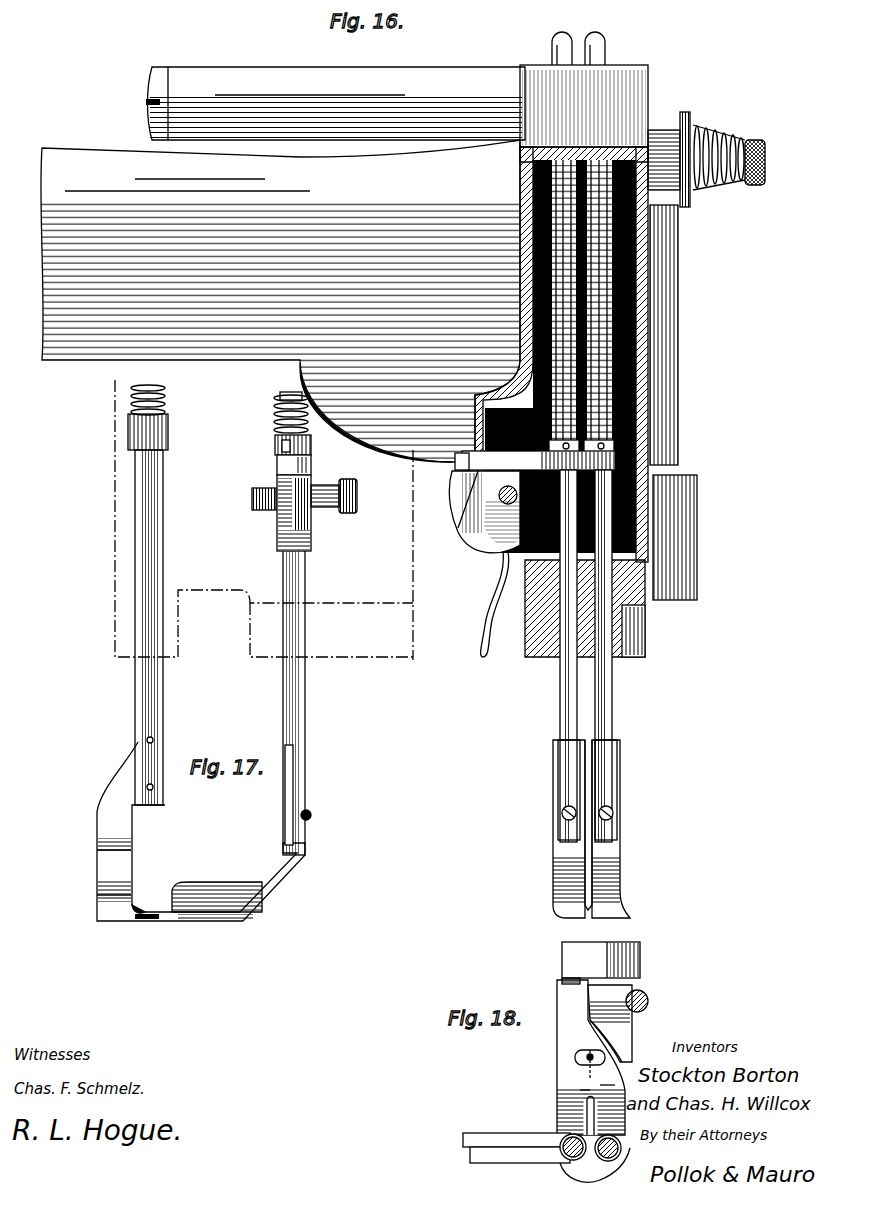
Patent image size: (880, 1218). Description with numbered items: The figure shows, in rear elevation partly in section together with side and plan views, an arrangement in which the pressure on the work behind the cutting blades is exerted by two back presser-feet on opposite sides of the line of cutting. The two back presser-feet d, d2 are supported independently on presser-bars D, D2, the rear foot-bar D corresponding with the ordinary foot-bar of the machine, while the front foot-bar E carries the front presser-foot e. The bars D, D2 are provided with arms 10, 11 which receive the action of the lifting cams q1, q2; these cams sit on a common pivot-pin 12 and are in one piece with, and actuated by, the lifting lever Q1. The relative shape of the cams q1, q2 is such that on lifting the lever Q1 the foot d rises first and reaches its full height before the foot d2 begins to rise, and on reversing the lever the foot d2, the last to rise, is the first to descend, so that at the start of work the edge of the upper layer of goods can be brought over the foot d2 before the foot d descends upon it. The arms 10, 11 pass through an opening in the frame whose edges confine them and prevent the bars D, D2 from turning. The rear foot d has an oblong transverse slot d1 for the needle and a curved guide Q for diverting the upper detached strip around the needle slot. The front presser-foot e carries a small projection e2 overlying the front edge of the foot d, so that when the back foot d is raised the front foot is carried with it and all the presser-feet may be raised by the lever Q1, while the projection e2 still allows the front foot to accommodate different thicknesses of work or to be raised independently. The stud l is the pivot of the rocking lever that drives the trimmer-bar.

In FIG. 16, the stud l is at (335, 103).
In FIG. 16, the arm 10 is at (459, 462).
In FIG. 17, the arm 10 is at (279, 463).
In FIG. 18, the arm 10 is at (516, 1140).
In FIG. 16, the arm 11 is at (538, 460).
In FIG. 17, the arm 11 is at (292, 446).
In FIG. 18, the arm 11 is at (520, 1155).
In FIG. 16, the pivot-pin 12 is at (499, 494).
In FIG. 17, the pivot-pin 12 is at (330, 482).
In FIG. 16, the lifting cam q1 is at (505, 508).
In FIG. 17, the lifting cam q1 is at (305, 512).
In FIG. 16, the lifting cam q2 is at (484, 512).
In FIG. 17, the lifting cam q2 is at (282, 514).
In FIG. 16, the lifting lever Q1 is at (498, 578).
In FIG. 17, the lifting lever Q1 is at (306, 636).
In FIG. 16, the rear foot-bar D is at (559, 702).
In FIG. 17, the rear foot-bar D is at (307, 690).
In FIG. 18, the rear foot-bar D is at (578, 1160).
In FIG. 16, the presser-bar D2 is at (613, 702).
In FIG. 18, the presser-bar D2 is at (618, 1158).
In FIG. 16, the rear presser-foot d is at (562, 906).
In FIG. 17, the rear presser-foot d is at (205, 922).
In FIG. 18, the rear presser-foot d is at (578, 1051).
In FIG. 18, the oblong transverse slot d1 is at (590, 1047).
In FIG. 16, the back presser-foot d2 is at (622, 900).
In FIG. 18, the back presser-foot d2 is at (633, 1030).
In FIG. 17, the front foot-bar E is at (136, 694).
In FIG. 18, the front foot-bar E is at (648, 999).
In FIG. 17, the front presser-foot e is at (201, 831).
In FIG. 18, the front presser-foot e is at (601, 960).
In FIG. 17, the projection e2 is at (160, 905).
In FIG. 18, the projection e2 is at (562, 979).
In FIG. 17, the curved guide Q is at (217, 897).
In FIG. 18, the curved guide Q is at (610, 1023).